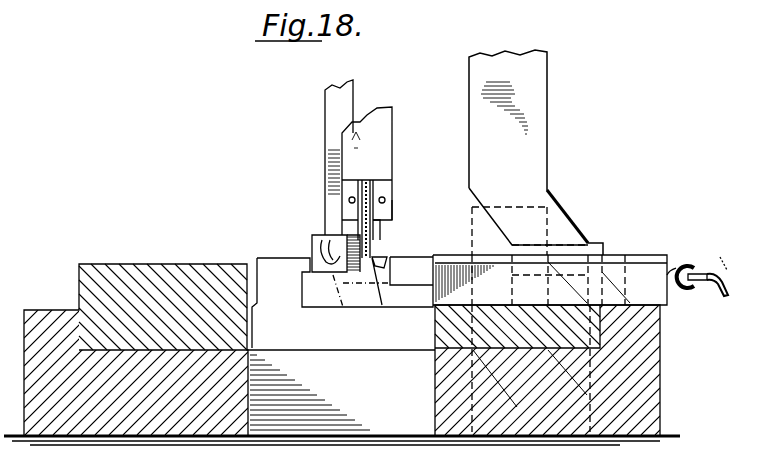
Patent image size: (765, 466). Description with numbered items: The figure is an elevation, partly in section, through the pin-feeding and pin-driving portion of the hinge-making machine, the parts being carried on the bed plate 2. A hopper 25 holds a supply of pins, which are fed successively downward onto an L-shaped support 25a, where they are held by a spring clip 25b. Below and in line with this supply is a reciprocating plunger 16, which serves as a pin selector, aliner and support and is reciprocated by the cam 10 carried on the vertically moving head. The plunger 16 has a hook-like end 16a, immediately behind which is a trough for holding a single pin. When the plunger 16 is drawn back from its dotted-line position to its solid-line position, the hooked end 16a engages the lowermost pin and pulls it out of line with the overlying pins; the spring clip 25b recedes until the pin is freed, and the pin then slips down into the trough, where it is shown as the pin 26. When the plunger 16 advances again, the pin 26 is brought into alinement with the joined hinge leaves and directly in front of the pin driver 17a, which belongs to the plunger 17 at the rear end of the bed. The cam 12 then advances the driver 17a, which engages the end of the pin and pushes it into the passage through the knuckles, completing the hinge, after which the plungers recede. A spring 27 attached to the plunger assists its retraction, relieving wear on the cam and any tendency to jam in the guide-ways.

The bed plate 2 is at (52, 312).
The cam 10 is at (536, 152).
The cam 12 is at (332, 110).
The reciprocating plunger 16 is at (411, 300).
The hook-like end 16a is at (381, 258).
The plunger 17 is at (312, 238).
The pin driver 17a is at (347, 233).
The hopper 25 is at (367, 182).
The L-shaped support 25a is at (353, 232).
The spring clip 25b is at (377, 233).
The pin 26 is at (425, 257).
The spring 27 is at (718, 264).